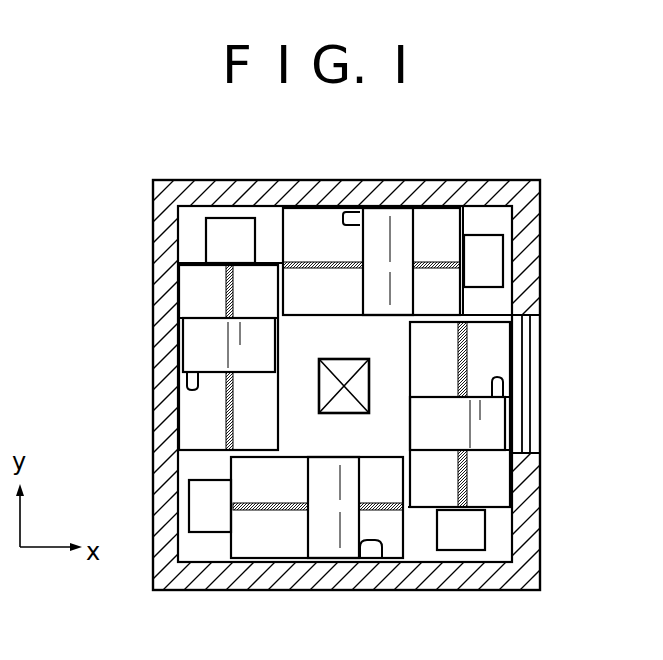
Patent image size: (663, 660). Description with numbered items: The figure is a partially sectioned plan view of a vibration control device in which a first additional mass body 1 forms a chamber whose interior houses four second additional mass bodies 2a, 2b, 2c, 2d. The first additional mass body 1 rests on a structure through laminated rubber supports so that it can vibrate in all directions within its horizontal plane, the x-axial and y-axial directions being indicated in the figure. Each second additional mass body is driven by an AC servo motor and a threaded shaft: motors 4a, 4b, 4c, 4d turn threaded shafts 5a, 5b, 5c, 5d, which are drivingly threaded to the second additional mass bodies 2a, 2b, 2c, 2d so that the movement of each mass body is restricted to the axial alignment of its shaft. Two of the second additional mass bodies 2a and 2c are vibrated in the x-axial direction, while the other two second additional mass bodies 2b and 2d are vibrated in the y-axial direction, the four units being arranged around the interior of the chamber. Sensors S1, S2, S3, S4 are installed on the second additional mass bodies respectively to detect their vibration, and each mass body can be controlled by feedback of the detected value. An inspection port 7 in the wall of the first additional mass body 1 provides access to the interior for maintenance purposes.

The first additional mass body 1 is at (162, 312).
The second additional mass body 2a is at (347, 540).
The second additional mass body 2b is at (195, 338).
The second additional mass body 2c is at (382, 221).
The second additional mass body 2d is at (495, 433).
The AC servo motor 4a is at (203, 498).
The AC servo motor 4b is at (225, 231).
The AC servo motor 4c is at (485, 248).
The AC servo motor 4d is at (477, 533).
The threaded shaft 5a is at (273, 512).
The threaded shaft 5b is at (225, 406).
The threaded shaft 5c is at (313, 253).
The threaded shaft 5d is at (468, 353).
The sensor S1 is at (382, 553).
The sensor S2 is at (188, 385).
The sensor S3 is at (353, 212).
The sensor S4 is at (503, 382).
The inspection port 7 is at (541, 393).